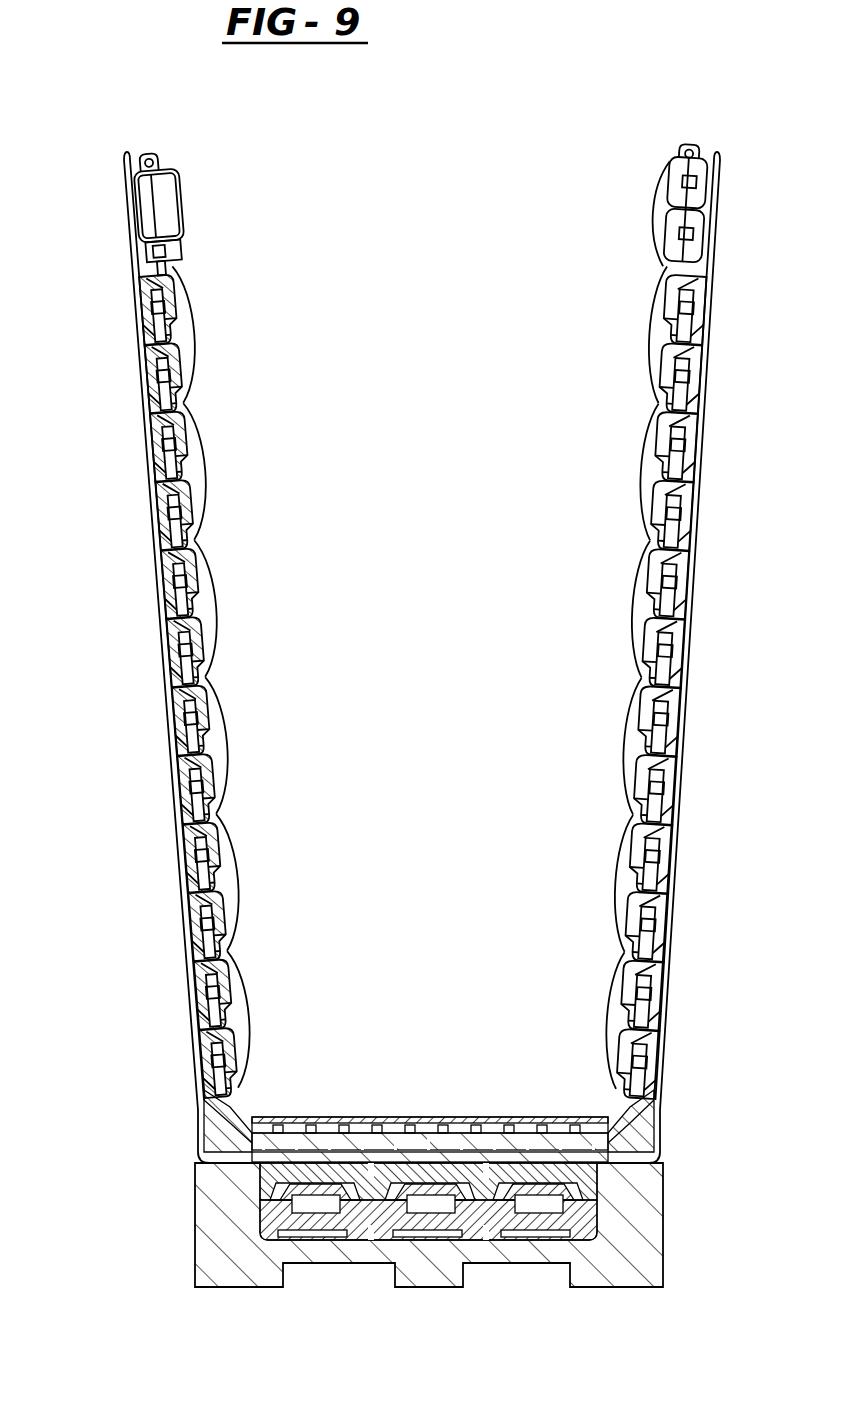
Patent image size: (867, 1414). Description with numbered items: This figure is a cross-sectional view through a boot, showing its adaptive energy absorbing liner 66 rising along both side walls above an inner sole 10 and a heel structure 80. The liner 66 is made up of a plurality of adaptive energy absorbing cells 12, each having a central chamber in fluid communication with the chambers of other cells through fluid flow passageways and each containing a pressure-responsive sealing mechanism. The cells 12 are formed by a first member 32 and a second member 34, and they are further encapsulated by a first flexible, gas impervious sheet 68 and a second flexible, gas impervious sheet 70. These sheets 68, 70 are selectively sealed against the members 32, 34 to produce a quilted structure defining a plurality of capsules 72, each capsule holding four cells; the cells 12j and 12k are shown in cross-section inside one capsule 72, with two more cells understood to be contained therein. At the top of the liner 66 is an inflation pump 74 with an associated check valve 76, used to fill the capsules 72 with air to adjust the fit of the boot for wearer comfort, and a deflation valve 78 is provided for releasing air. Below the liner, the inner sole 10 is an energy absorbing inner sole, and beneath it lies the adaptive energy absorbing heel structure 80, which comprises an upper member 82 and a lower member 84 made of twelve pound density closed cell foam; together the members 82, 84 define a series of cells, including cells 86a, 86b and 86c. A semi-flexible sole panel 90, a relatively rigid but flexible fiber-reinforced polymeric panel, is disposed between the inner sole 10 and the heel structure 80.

The inner sole 10 is at (482, 1120).
The adaptive energy absorbing cell 12 is at (398, 563).
The cell 12j is at (183, 860).
The cell 12k is at (180, 945).
The first member 32 is at (150, 423).
The second member 34 is at (180, 425).
The adaptive energy absorbing liner 66 is at (207, 487).
The first flexible gas impervious sheet 68 is at (222, 625).
The second flexible gas impervious sheet 70 is at (163, 615).
The capsule 72 is at (222, 858).
The inflation pump 74 is at (165, 205).
The check valve 76 is at (148, 156).
The deflation valve 78 is at (695, 150).
The adaptive energy absorbing heel structure 80 is at (440, 1254).
The upper member 82 is at (592, 1184).
The lower member 84 is at (587, 1217).
The cell 86a is at (318, 1207).
The cell 86b is at (438, 1207).
The cell 86c is at (543, 1207).
The semi-flexible sole panel 90 is at (381, 657).